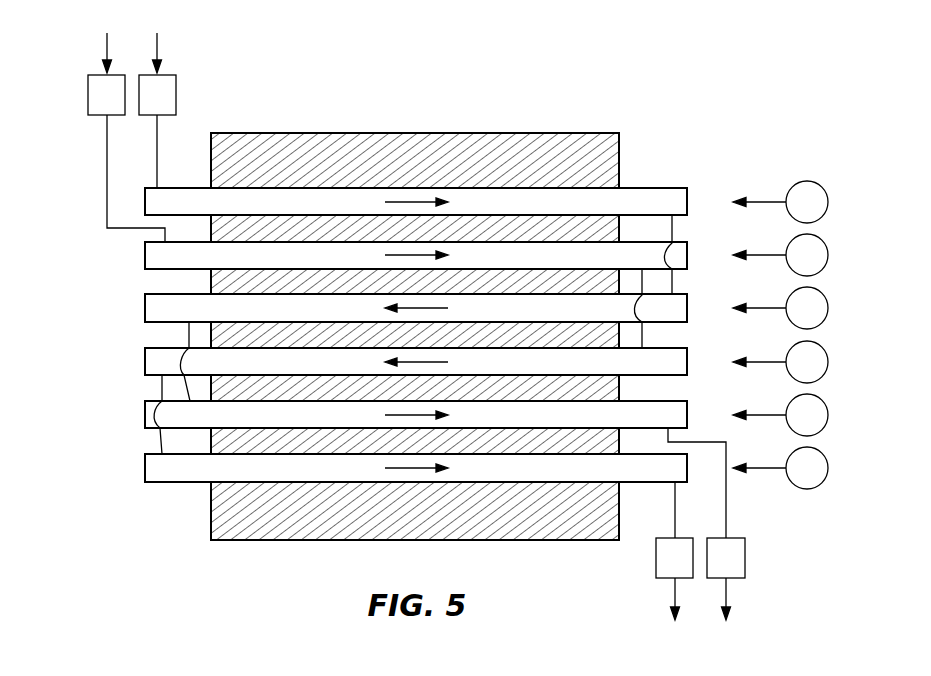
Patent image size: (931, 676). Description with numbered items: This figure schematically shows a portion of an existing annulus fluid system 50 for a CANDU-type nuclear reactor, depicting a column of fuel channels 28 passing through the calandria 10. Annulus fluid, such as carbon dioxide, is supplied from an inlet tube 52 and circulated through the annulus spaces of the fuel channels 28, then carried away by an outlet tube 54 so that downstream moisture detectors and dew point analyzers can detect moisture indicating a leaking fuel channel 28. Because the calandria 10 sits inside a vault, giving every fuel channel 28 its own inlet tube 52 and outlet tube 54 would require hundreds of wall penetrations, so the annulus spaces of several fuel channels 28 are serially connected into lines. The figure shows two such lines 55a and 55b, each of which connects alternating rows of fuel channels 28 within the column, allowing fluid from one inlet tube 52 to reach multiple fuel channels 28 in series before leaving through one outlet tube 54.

The calandria 10 is at (397, 133).
The fuel channel 28 is at (145, 258).
The flow arrangement 50 is at (689, 82).
The inlet tube 52 is at (107, 50).
The outlet tube 54 is at (726, 590).
The line 55a is at (175, 141).
The line 55b is at (88, 160).